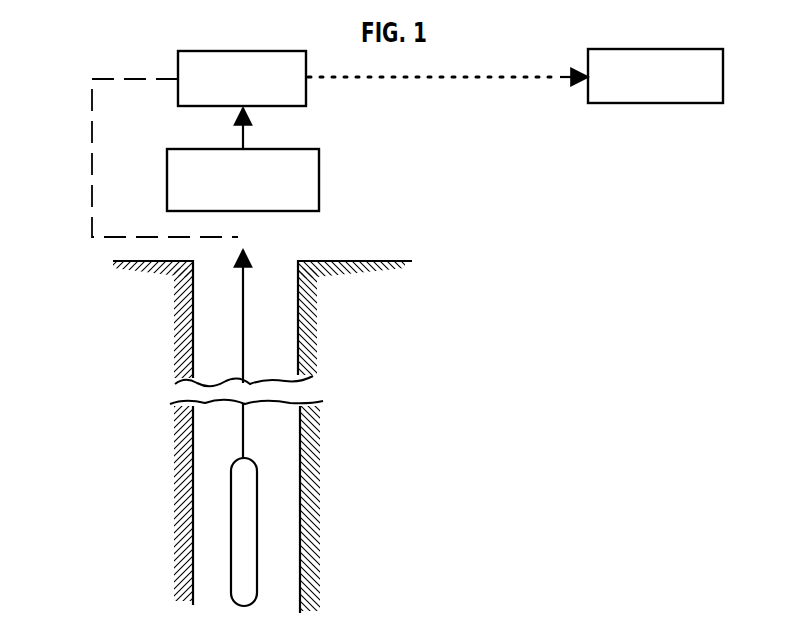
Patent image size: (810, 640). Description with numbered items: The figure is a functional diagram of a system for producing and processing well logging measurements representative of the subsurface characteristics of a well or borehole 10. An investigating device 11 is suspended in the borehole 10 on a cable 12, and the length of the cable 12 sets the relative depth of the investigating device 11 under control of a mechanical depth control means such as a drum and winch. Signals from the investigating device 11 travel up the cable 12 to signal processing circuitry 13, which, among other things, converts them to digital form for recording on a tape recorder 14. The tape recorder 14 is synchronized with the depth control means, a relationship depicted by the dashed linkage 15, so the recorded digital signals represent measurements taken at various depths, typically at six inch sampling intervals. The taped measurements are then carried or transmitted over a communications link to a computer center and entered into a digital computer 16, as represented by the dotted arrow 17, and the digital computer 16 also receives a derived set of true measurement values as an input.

The borehole 10 is at (288, 328).
The investigating device 11 is at (247, 497).
The cable 12 is at (243, 308).
The signal processing circuitry 13 is at (319, 190).
The tape recorder 14 is at (178, 87).
The dashed linkage 15 is at (91, 117).
The digital computer 16 is at (640, 103).
The dotted arrow 17 is at (466, 77).